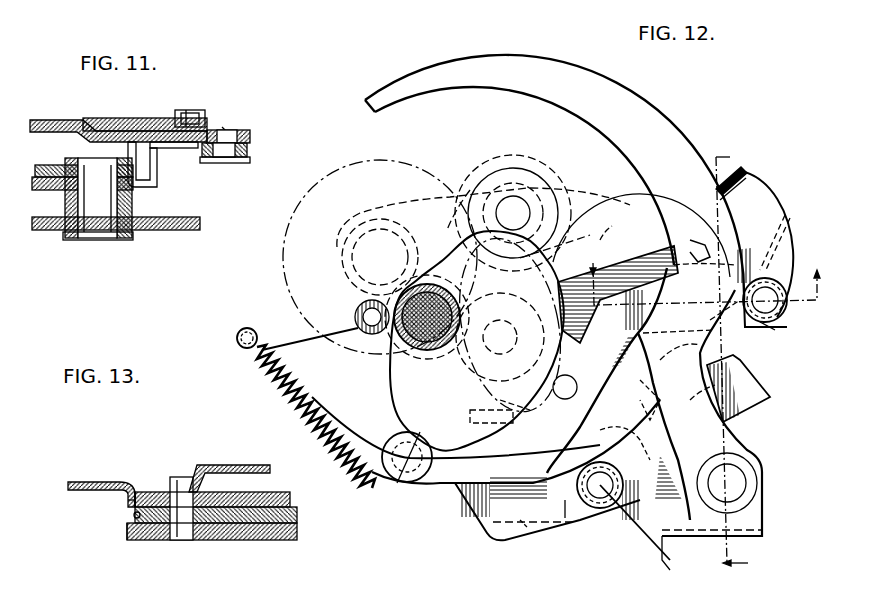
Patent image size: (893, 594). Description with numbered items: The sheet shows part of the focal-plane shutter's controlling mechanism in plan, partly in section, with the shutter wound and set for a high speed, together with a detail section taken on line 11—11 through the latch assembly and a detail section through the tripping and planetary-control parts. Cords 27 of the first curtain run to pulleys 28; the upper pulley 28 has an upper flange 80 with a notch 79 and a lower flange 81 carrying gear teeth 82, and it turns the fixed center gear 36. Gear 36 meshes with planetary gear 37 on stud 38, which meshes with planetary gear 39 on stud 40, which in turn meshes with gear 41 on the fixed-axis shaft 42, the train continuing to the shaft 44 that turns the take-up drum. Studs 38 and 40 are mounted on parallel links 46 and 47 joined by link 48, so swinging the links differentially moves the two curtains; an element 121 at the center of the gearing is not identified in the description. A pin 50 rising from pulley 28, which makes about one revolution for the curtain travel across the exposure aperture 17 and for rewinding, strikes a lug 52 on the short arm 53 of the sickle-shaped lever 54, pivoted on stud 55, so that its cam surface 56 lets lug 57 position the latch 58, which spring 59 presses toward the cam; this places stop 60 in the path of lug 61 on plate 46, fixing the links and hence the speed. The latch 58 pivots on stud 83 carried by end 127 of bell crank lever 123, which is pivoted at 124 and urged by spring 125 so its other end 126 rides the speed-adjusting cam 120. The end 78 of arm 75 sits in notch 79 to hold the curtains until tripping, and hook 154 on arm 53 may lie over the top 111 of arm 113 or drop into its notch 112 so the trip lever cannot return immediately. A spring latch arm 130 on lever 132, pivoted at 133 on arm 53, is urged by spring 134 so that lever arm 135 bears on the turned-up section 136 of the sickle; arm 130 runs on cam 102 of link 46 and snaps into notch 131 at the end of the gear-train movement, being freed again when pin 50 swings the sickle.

In FIG. 12, the section line 11— 11 is at (707, 270).
In FIG. 12, the exposure aperture 17 is at (744, 353).
In FIG. 13, the tapes or cords 27 is at (134, 516).
In FIG. 13, the pulleys 28 is at (290, 512).
In FIG. 12, the pulleys 28 is at (462, 200).
In FIG. 12, the gear 36 is at (463, 375).
In FIG. 11, the planetary gear 37 is at (170, 230).
In FIG. 12, the planetary gear 37 is at (623, 195).
In FIG. 11, the stud 38 is at (90, 238).
In FIG. 12, the planetary gear 39 is at (525, 173).
In FIG. 12, the stud 40 is at (513, 196).
In FIG. 12, the gear 41 is at (440, 190).
In FIG. 12, the fixed-axis shaft 42 is at (352, 260).
In FIG. 12, the shaft 44 is at (505, 316).
In FIG. 11, the parallel link 46 is at (42, 190).
In FIG. 12, the parallel link 46 is at (610, 255).
In FIG. 12, the parallel link 47 is at (410, 207).
In FIG. 11, the link 48 is at (45, 170).
In FIG. 12, the link 48 is at (572, 228).
In FIG. 13, the pin 50 is at (182, 478).
In FIG. 12, the pin 50 is at (540, 370).
In FIG. 12, the lug 52 is at (548, 395).
In FIG. 12, the short arm 53 is at (565, 522).
In FIG. 11, the sickle-shaped lever 54 is at (155, 118).
In FIG. 13, the sickle-shaped lever 54 is at (245, 465).
In FIG. 12, the sickle-shaped lever 54 is at (663, 137).
In FIG. 12, the stud 55 is at (737, 480).
In FIG. 12, the cam surface 56 is at (693, 152).
In FIG. 11, the lug 57 is at (192, 110).
In FIG. 12, the lug 57 is at (742, 172).
In FIG. 11, the latch 58 is at (250, 136).
In FIG. 12, the latch 58 is at (770, 205).
In FIG. 11, the spring 59 is at (250, 150).
In FIG. 12, the spring 59 is at (788, 226).
In FIG. 11, the stop 60 is at (175, 148).
In FIG. 12, the stop 60 is at (695, 257).
In FIG. 11, the lug 61 is at (150, 170).
In FIG. 12, the lug 61 is at (667, 260).
In FIG. 13, the arm 75 is at (85, 482).
In FIG. 12, the arm 75 is at (758, 400).
In FIG. 13, the end of arm 78 is at (127, 500).
In FIG. 12, the end of arm 78 is at (553, 392).
In FIG. 13, the notch 79 is at (137, 493).
In FIG. 12, the notch 79 is at (588, 395).
In FIG. 13, the upper flange 80 is at (280, 493).
In FIG. 13, the lower flange 81 is at (265, 538).
In FIG. 13, the gear teeth 82 is at (128, 530).
In FIG. 11, the stud 83 is at (224, 128).
In FIG. 12, the stud 83 is at (778, 312).
In FIG. 12, the cam 102 is at (490, 537).
In FIG. 12, the top of arm 111 is at (700, 325).
In FIG. 12, the notch 112 is at (667, 400).
In FIG. 12, the arm 113 is at (705, 350).
In FIG. 12, the speed-adjusting cam 120 is at (418, 393).
In FIG. 12, the hub 121 is at (432, 284).
In FIG. 11, the bell crank lever 123 is at (55, 107).
In FIG. 12, the bell crank lever 123 is at (445, 485).
In FIG. 12, the pivot 124 is at (410, 483).
In FIG. 12, the spring 125 is at (300, 410).
In FIG. 12, the lever end 126 is at (362, 310).
In FIG. 12, the other end 127 is at (762, 330).
In FIG. 12, the spring latch arm 130 is at (470, 412).
In FIG. 12, the notch 131 is at (495, 402).
In FIG. 12, the lever 132 is at (472, 520).
In FIG. 12, the pivot 133 is at (598, 510).
In FIG. 12, the spring 134 is at (537, 525).
In FIG. 12, the lever arm 135 is at (673, 560).
In FIG. 12, the turned-up section 136 is at (765, 532).
In FIG. 12, the hook 154 is at (628, 438).